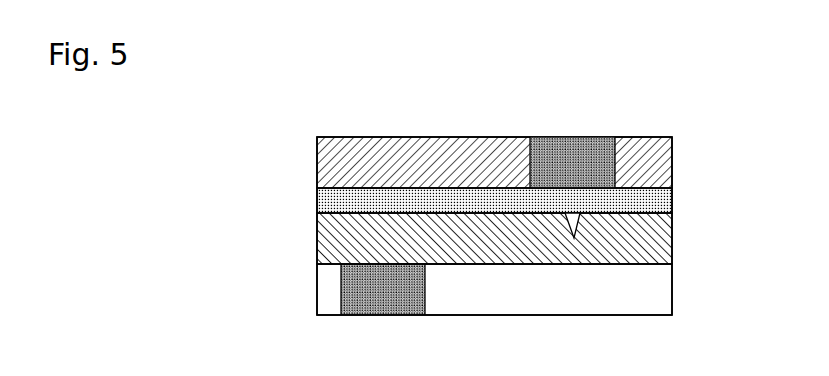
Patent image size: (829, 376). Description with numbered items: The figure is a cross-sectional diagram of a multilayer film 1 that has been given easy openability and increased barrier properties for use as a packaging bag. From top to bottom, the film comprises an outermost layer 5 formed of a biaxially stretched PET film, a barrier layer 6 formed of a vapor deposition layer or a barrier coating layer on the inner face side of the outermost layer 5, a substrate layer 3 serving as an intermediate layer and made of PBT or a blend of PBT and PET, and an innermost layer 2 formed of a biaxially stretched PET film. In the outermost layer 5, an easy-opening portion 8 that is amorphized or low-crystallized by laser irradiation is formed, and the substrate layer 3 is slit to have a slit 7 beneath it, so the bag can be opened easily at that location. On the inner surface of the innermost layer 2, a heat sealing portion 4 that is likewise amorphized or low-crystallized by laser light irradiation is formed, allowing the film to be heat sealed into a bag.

The multilayer film 1 is at (288, 155).
The innermost layer 2 is at (666, 292).
The substrate layer 3 is at (666, 236).
The heat sealing portion 4 is at (407, 315).
The outermost layer 5 is at (666, 162).
The barrier layer 6 is at (673, 199).
The slit 7 is at (570, 232).
The easy-opening portion 8 is at (600, 137).